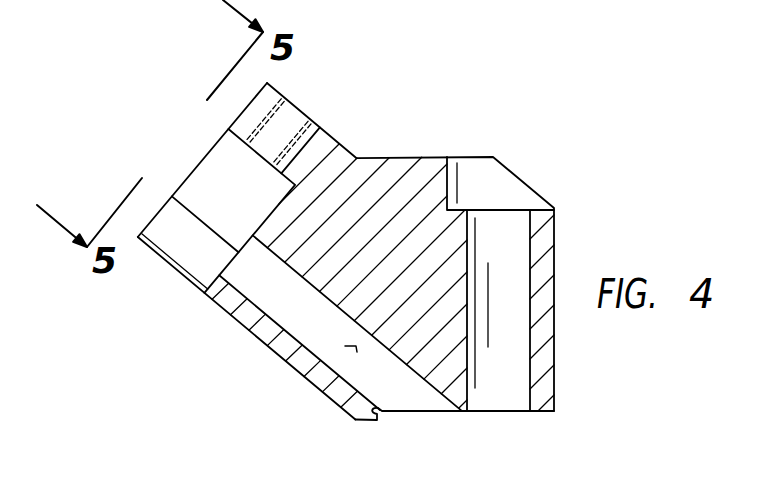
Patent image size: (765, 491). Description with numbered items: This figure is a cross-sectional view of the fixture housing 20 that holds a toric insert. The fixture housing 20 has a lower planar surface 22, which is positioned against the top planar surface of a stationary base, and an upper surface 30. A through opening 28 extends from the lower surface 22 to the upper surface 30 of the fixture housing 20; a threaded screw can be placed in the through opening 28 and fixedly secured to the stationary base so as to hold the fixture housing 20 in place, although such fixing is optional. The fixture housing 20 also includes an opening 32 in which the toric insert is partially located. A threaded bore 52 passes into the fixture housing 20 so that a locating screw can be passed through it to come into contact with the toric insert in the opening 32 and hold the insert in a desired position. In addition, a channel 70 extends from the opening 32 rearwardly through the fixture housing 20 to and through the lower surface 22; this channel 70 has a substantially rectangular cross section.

The fixture housing 20 is at (223, 322).
The lower planar surface 22 is at (547, 412).
The through opening 28 is at (532, 273).
The upper surface 30 is at (405, 157).
The opening 32 is at (207, 184).
The threaded bore 52 is at (297, 137).
The channel 70 is at (350, 348).